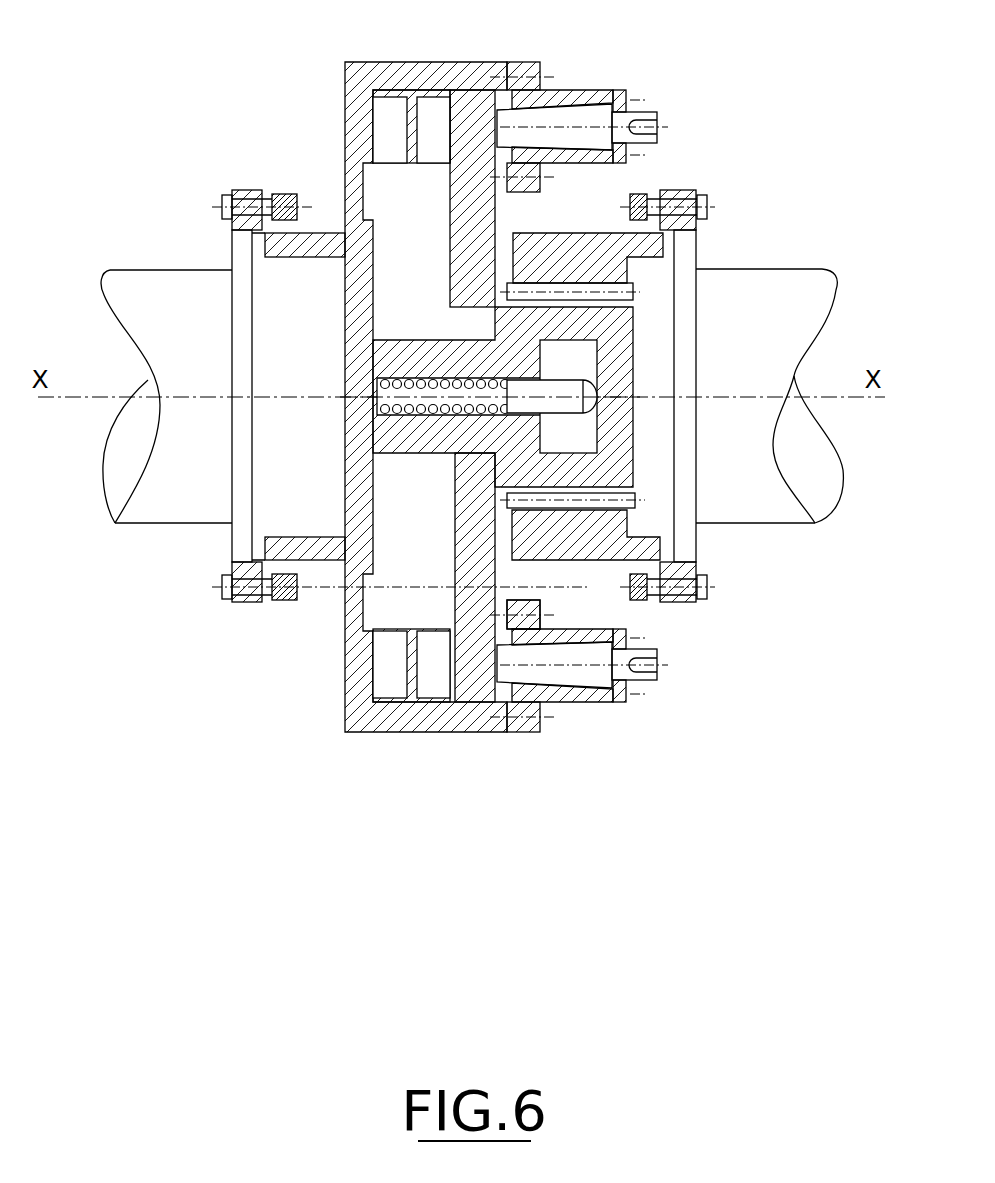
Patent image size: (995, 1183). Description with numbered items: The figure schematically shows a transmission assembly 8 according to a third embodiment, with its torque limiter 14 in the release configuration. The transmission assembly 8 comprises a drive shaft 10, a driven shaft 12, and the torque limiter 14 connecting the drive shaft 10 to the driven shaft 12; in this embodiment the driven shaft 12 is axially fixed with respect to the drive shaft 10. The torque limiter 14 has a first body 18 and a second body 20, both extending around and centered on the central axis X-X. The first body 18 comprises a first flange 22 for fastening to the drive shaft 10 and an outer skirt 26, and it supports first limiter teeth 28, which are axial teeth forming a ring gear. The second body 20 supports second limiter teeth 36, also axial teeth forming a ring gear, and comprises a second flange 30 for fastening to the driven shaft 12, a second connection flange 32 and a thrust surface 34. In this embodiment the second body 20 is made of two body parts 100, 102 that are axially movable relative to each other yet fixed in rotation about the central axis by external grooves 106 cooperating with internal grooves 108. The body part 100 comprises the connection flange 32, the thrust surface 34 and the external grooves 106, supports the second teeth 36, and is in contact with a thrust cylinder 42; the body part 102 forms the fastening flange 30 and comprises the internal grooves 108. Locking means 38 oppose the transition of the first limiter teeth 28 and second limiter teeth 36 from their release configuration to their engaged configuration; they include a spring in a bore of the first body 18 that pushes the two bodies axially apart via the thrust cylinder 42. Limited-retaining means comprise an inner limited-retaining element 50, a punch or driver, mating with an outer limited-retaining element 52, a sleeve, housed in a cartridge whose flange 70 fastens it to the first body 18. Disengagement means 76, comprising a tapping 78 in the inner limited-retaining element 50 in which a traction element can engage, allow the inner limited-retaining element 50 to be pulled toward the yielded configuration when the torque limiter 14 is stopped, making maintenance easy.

The transmission assembly 8 is at (292, 790).
The drive shaft 10 is at (173, 503).
The driven shaft 12 is at (734, 500).
The torque limiter 14 is at (297, 692).
The first body 18 is at (310, 183).
The second body 20 is at (600, 215).
The first flange 22 is at (285, 250).
The outer skirt 26 is at (470, 80).
The first limiter teeth 28 is at (390, 128).
The second flange 30 is at (652, 547).
The second connection flange 32 is at (470, 245).
The thrust surface 34 is at (543, 630).
The second limiter teeth 36 is at (433, 145).
The locking means 38 is at (395, 394).
The thrust cylinder 42 is at (563, 390).
The inner limited-retaining element 50 is at (530, 660).
The outer limited-retaining element 52 is at (593, 716).
The flange 70 is at (535, 724).
The disengagement means 76 is at (695, 103).
The tapping 78 is at (660, 127).
The body part 100 is at (470, 533).
The body part 102 is at (597, 545).
The external grooves 106 is at (688, 310).
The internal grooves 108 is at (640, 290).